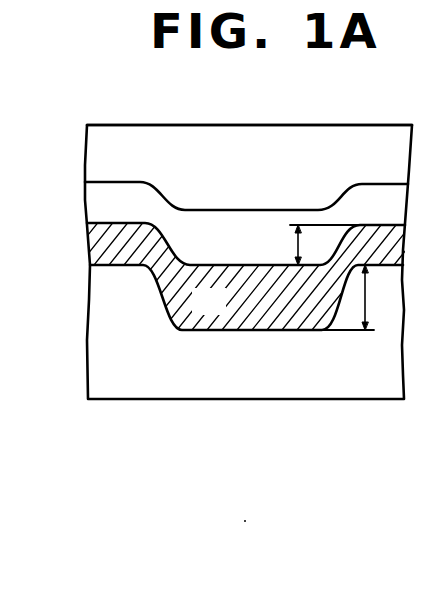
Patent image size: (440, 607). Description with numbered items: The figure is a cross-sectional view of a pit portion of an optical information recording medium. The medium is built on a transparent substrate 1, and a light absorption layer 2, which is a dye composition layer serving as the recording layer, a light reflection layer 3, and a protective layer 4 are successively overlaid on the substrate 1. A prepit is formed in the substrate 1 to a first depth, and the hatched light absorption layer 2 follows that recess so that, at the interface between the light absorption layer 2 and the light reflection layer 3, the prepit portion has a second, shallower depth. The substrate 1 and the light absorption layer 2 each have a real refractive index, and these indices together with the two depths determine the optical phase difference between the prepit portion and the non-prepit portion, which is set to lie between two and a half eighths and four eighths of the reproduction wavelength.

The transparent substrate 1 is at (96, 354).
The light absorption layer 2 is at (92, 252).
The light reflection layer 3 is at (95, 208).
The protective layer 4 is at (95, 162).